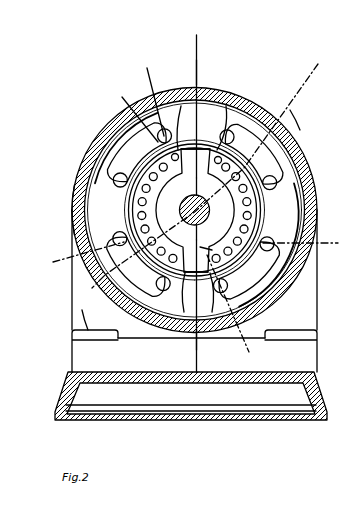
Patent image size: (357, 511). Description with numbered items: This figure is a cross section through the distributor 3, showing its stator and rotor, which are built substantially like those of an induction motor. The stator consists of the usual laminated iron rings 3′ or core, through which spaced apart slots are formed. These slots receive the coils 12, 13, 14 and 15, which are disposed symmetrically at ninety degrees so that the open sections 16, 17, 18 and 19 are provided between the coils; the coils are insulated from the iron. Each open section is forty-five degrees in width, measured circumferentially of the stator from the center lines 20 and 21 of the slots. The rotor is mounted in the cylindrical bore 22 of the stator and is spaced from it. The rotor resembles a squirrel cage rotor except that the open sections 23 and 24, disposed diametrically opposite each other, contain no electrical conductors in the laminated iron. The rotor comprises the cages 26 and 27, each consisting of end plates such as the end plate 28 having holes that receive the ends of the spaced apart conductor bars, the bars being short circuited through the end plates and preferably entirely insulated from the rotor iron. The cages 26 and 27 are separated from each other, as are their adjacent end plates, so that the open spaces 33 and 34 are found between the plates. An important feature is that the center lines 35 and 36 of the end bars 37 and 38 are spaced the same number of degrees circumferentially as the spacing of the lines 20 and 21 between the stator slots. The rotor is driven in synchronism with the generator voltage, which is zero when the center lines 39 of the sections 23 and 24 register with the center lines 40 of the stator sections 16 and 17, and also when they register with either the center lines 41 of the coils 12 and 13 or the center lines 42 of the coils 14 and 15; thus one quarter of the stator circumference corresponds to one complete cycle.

The center line 20 is at (247, 95).
The center line 35 is at (246, 98).
The center line 36 is at (150, 96).
The center line 41 is at (150, 158).
The center line 39 is at (197, 43).
The center line 40 is at (197, 73).
The cylindrical bore 22 is at (72, 233).
The center line 42 is at (313, 116).
The distributor 3 is at (312, 128).
The center line 21 is at (329, 152).
The laminated iron rings 3′ is at (132, 115).
The open section 18 is at (149, 210).
The open section 19 is at (241, 210).
The coil 12 is at (136, 152).
The coil 15 is at (231, 141).
The coil 13 is at (249, 270).
The coil 14 is at (136, 266).
The end bar 38 is at (179, 128).
The end bar 37 is at (223, 128).
The open section 16 is at (197, 147).
The open section 17 is at (197, 292).
The cage 26 is at (153, 211).
The cage 27 is at (239, 211).
The open section 23 is at (195, 158).
The open section 24 is at (196, 268).
The open space 33 is at (196, 186).
The end plate 28 is at (191, 236).
The open space 34 is at (201, 253).